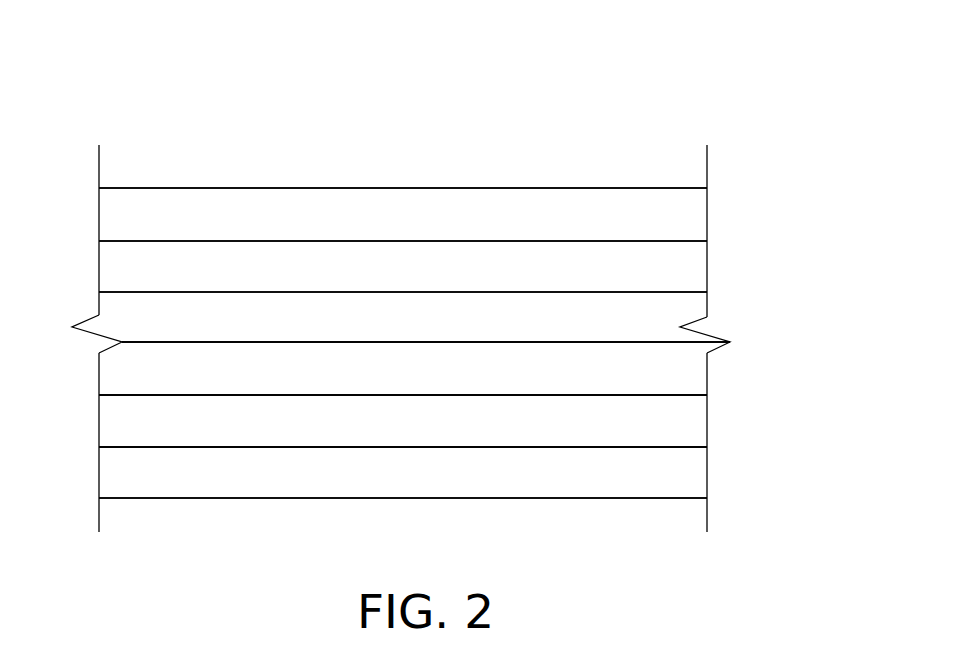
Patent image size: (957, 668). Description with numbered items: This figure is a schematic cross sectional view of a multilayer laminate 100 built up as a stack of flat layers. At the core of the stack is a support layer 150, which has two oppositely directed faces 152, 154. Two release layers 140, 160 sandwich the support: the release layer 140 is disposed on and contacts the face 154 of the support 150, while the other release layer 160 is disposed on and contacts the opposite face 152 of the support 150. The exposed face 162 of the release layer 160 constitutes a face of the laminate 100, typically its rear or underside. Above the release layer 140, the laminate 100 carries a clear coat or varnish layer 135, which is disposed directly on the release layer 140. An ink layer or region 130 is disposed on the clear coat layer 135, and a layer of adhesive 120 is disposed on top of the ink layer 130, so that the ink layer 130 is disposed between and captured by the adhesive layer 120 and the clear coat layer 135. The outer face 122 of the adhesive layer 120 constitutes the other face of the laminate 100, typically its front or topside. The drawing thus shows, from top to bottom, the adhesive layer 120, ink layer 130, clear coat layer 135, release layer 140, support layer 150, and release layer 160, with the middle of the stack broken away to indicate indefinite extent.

The multilayer laminate 100 is at (64, 107).
The adhesive layer 120 is at (692, 215).
The outer face of the adhesive layer 122 is at (525, 188).
The ink layer 130 is at (692, 267).
The clear coat layer 135 is at (678, 311).
The release layer 140 is at (683, 377).
The support layer 150 is at (683, 421).
The face of the support layer 152 is at (135, 447).
The face of the support layer 154 is at (145, 395).
The release layer 160 is at (683, 476).
The exposed face of the release layer 162 is at (497, 498).